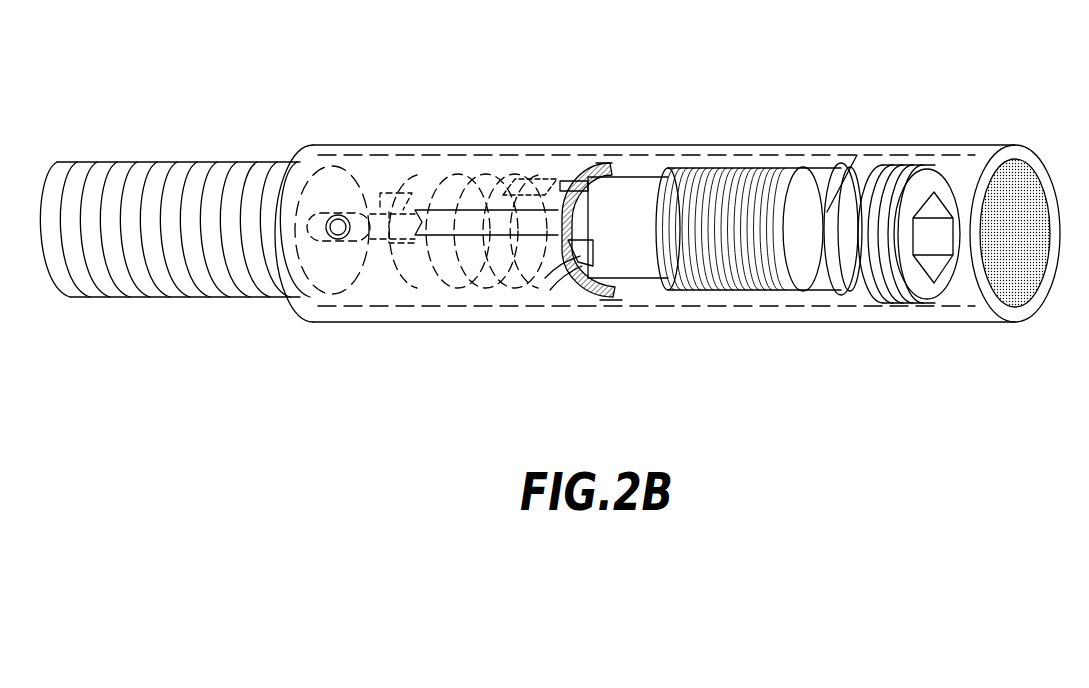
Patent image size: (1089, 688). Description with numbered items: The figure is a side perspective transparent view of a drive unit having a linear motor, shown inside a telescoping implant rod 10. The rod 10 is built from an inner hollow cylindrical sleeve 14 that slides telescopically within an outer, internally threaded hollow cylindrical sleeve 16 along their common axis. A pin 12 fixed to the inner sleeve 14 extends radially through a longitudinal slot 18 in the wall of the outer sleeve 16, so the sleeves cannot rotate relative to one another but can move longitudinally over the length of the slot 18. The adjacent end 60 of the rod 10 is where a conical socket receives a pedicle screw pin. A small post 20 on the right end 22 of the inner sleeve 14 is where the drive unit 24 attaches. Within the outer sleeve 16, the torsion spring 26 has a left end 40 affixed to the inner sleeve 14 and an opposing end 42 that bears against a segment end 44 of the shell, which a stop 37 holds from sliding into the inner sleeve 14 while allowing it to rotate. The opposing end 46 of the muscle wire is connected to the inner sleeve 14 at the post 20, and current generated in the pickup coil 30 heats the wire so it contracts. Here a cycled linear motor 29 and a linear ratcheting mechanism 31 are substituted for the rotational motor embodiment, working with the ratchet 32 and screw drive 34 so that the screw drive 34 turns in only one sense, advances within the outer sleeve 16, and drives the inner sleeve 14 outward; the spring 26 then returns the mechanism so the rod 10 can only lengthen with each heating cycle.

The rod 10 is at (372, 443).
The pin 12 is at (340, 215).
The inner hollow cylindrical sleeve 14 is at (202, 163).
The outer hollow cylindrical sleeve 16 is at (766, 145).
The longitudinal slot 18 is at (373, 245).
The post 20 is at (587, 300).
The right end 22 is at (614, 160).
The drive unit 24 is at (688, 118).
The torsion spring 26 is at (495, 290).
The linear motor 29 is at (618, 303).
The pickup coil 30 is at (725, 292).
The linear ratcheting mechanism 31 is at (437, 210).
The ratchet 32 is at (836, 295).
The screw drive 34 is at (893, 303).
The stop 37 is at (599, 162).
The left end of torsion spring 40 is at (395, 193).
The opposing end of torsion spring 42 is at (558, 178).
The segment end of shell 44 is at (548, 290).
The opposing end of wire 46 is at (572, 181).
The adjacent end of rod 60 is at (45, 280).